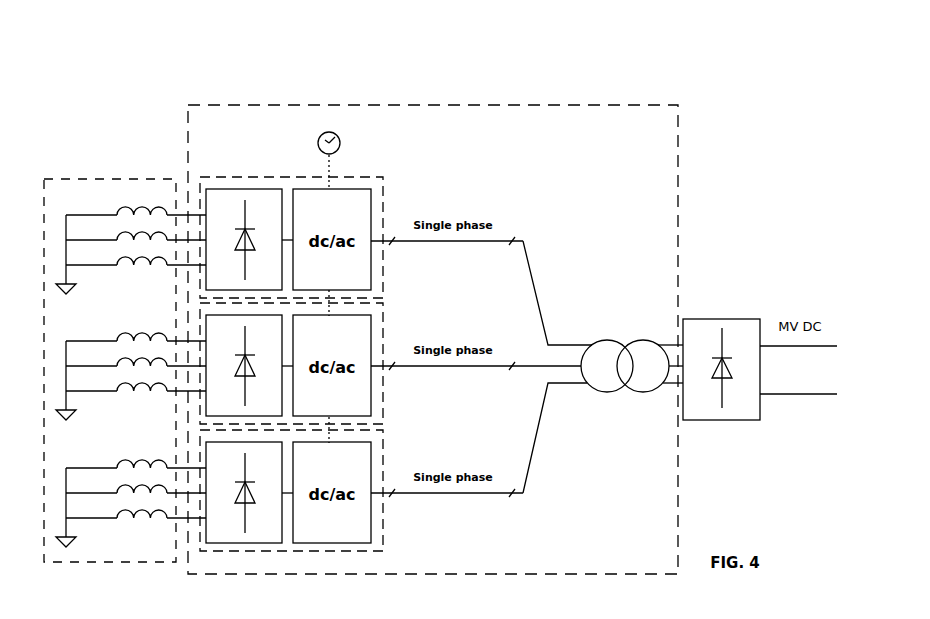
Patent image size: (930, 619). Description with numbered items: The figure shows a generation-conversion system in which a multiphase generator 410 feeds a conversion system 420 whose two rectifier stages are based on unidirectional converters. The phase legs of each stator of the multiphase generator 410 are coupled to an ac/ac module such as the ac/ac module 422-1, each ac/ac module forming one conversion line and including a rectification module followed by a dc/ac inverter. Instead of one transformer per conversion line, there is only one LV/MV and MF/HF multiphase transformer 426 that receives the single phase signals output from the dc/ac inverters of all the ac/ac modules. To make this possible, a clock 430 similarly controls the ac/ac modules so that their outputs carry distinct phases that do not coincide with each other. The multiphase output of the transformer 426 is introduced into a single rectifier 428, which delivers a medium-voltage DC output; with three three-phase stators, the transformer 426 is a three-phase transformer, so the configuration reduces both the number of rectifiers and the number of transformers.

The multiphase generator 410 is at (77, 180).
The power conversion system 420 is at (477, 105).
The ac/ac module 422-1 is at (383, 195).
The LV/MV and MF/HF multiphase transformer 426 is at (607, 340).
The rectifier 428 is at (710, 319).
The clock 430 is at (340, 139).